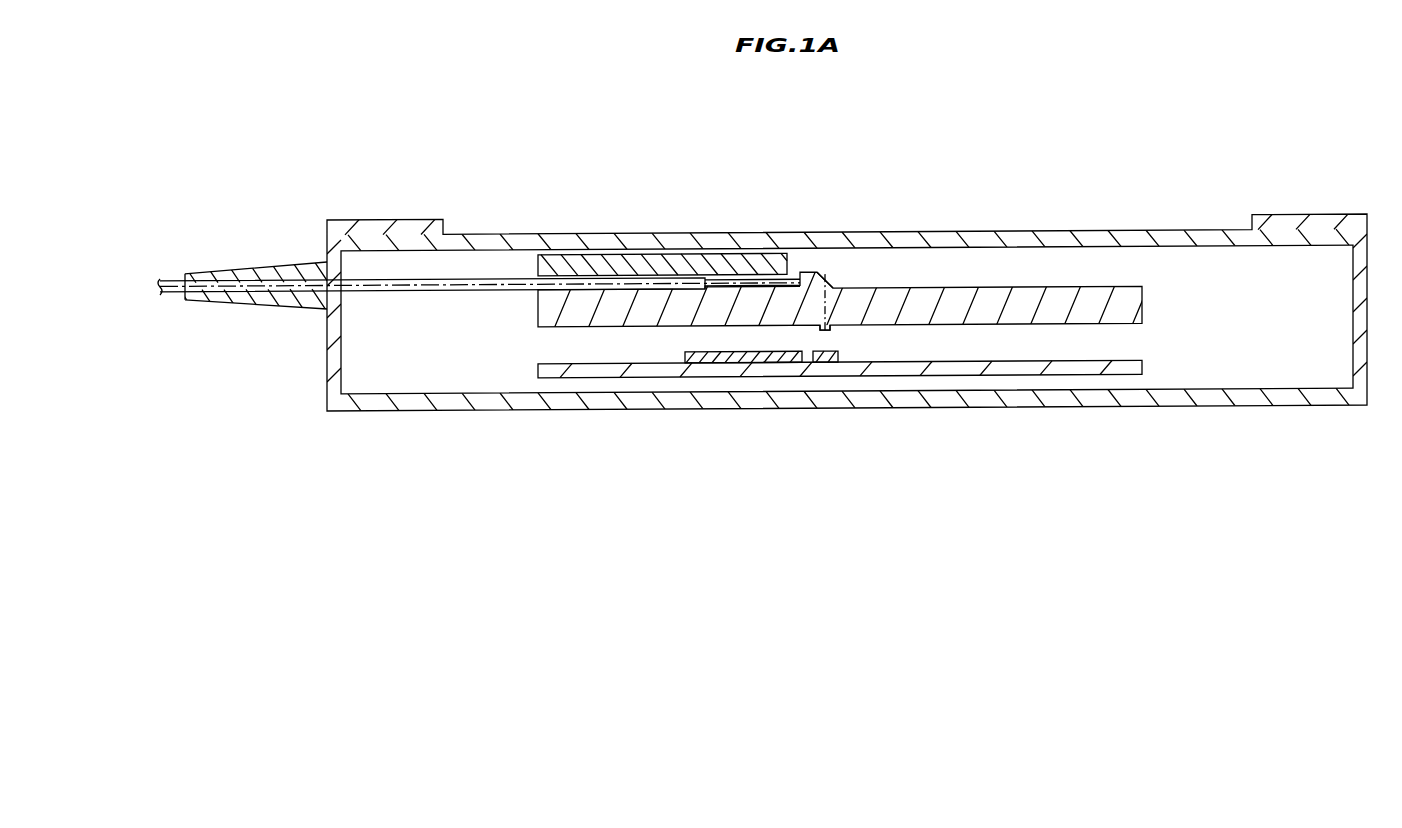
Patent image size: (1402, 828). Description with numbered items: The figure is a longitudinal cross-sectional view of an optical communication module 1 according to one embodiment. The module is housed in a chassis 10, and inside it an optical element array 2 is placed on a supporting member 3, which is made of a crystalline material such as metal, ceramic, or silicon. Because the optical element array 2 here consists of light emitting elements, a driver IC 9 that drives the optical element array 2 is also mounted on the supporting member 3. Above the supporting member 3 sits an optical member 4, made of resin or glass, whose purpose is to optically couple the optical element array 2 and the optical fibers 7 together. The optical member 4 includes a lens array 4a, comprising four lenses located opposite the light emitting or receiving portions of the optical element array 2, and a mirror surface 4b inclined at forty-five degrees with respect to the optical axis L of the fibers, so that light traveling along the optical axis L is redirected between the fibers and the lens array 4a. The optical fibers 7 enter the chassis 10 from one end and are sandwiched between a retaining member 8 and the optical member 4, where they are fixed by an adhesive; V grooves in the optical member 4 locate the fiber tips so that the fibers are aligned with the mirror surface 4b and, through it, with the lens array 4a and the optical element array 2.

The optical communication module 1 is at (1199, 175).
The optical element array 2 is at (830, 348).
The supporting member 3 is at (647, 373).
The optical member 4 is at (534, 344).
The lens array 4a is at (839, 346).
The mirror surface 4b is at (817, 280).
The optical fibers 7 is at (791, 261).
The retaining member 8 is at (690, 267).
The driver IC 9 is at (750, 358).
The chassis 10 is at (332, 367).
The optical axis L is at (472, 285).